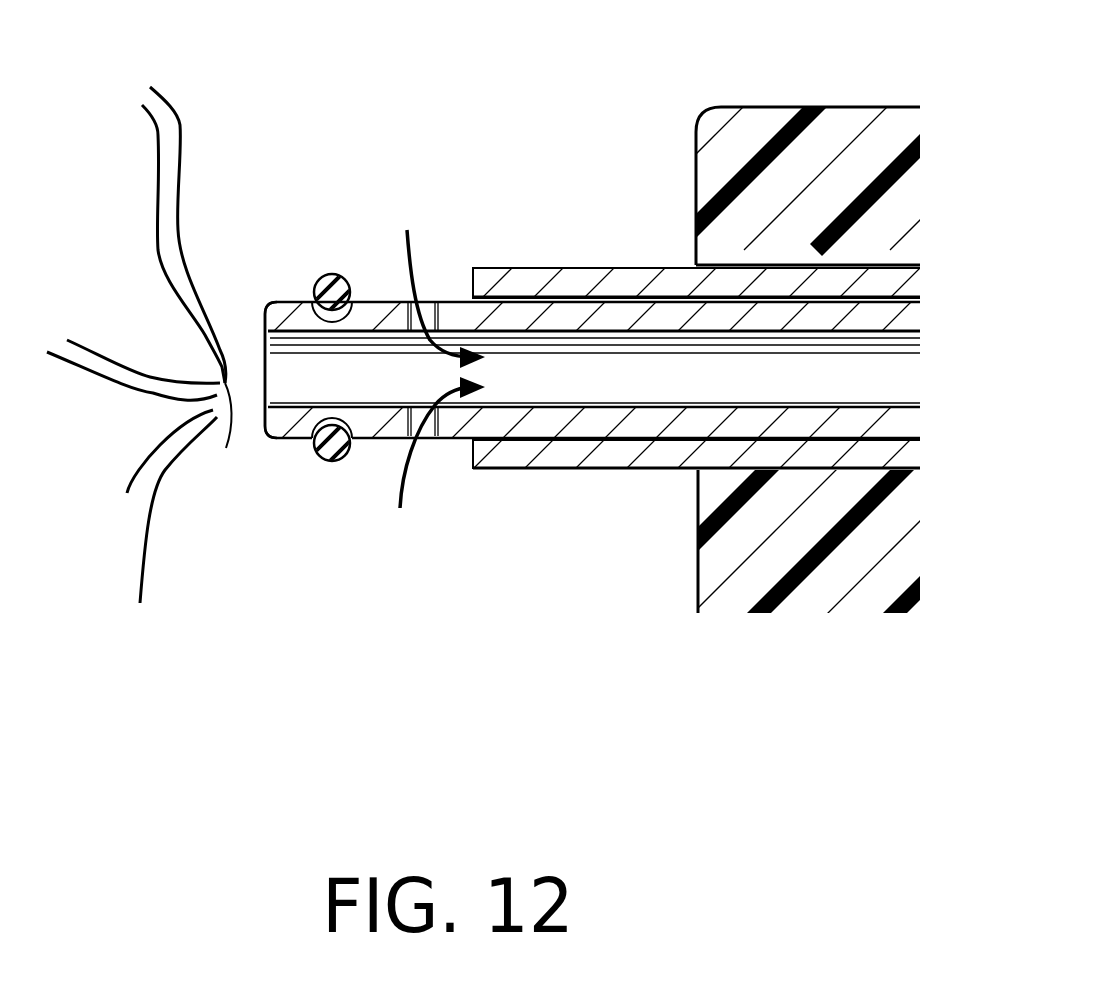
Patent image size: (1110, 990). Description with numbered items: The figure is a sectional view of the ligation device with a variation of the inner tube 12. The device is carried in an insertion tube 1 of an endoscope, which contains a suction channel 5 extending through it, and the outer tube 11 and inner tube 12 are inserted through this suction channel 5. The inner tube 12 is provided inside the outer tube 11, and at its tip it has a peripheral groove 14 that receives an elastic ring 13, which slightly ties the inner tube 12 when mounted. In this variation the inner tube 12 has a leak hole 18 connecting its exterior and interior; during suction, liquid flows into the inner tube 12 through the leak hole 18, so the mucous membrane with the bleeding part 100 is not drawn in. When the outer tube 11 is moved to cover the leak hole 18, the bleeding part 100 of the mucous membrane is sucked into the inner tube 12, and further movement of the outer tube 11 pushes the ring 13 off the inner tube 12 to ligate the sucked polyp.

The insertion tube 1 is at (823, 350).
The suction channel 5 is at (778, 263).
The outer tube 11 is at (537, 270).
The inner tube 12 is at (637, 322).
The ring 13 is at (323, 277).
The peripheral groove 14 is at (300, 318).
The leak hole 18 is at (428, 312).
The bleeding part 100 is at (226, 448).